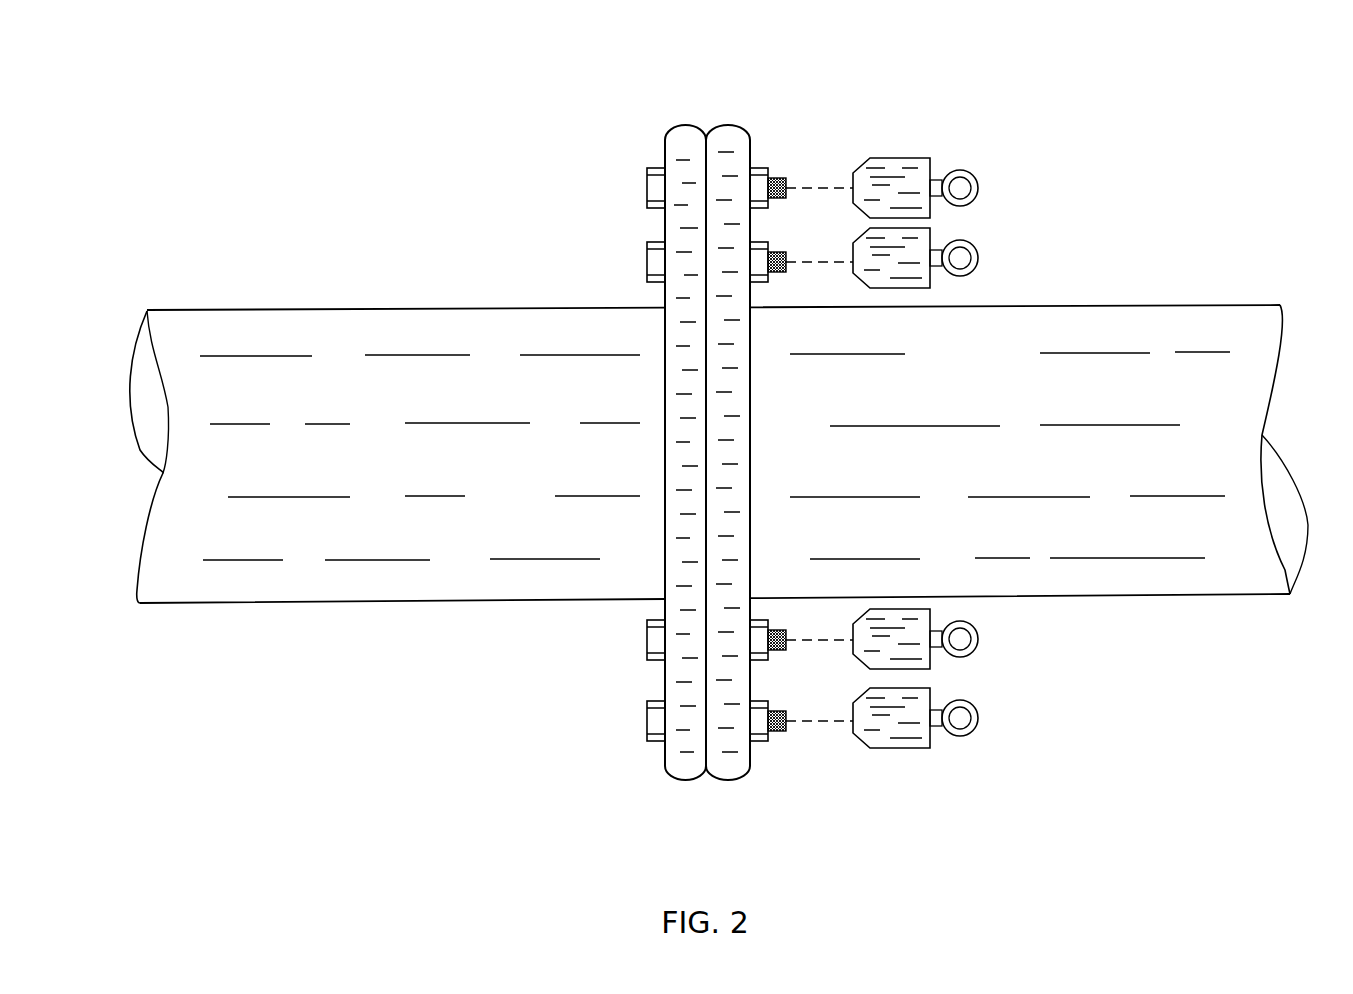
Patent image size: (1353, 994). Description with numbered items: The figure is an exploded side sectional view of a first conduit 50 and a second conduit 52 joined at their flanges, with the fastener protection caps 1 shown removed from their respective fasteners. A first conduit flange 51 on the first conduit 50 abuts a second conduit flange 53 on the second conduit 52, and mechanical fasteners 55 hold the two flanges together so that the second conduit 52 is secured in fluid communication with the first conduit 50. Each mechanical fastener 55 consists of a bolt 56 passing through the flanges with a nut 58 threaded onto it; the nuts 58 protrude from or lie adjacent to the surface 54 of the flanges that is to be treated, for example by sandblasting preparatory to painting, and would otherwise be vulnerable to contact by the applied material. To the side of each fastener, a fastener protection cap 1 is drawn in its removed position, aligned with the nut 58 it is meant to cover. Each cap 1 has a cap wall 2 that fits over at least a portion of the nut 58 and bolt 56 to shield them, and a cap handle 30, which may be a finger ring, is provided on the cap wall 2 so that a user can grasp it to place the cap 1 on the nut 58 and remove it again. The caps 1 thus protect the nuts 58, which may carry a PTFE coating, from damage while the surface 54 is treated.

The fastener protection cap 1 is at (990, 220).
The cap wall 2 is at (884, 152).
The cap handle 30 is at (960, 170).
The first conduit 50 is at (572, 306).
The first conduit flange 51 is at (667, 125).
The second conduit 52 is at (1117, 318).
The second conduit flange 53 is at (727, 138).
The surface to be treated 54 is at (769, 222).
The mechanical fastener 55 is at (620, 150).
The bolt 56 is at (785, 176).
The nut 58 is at (764, 165).